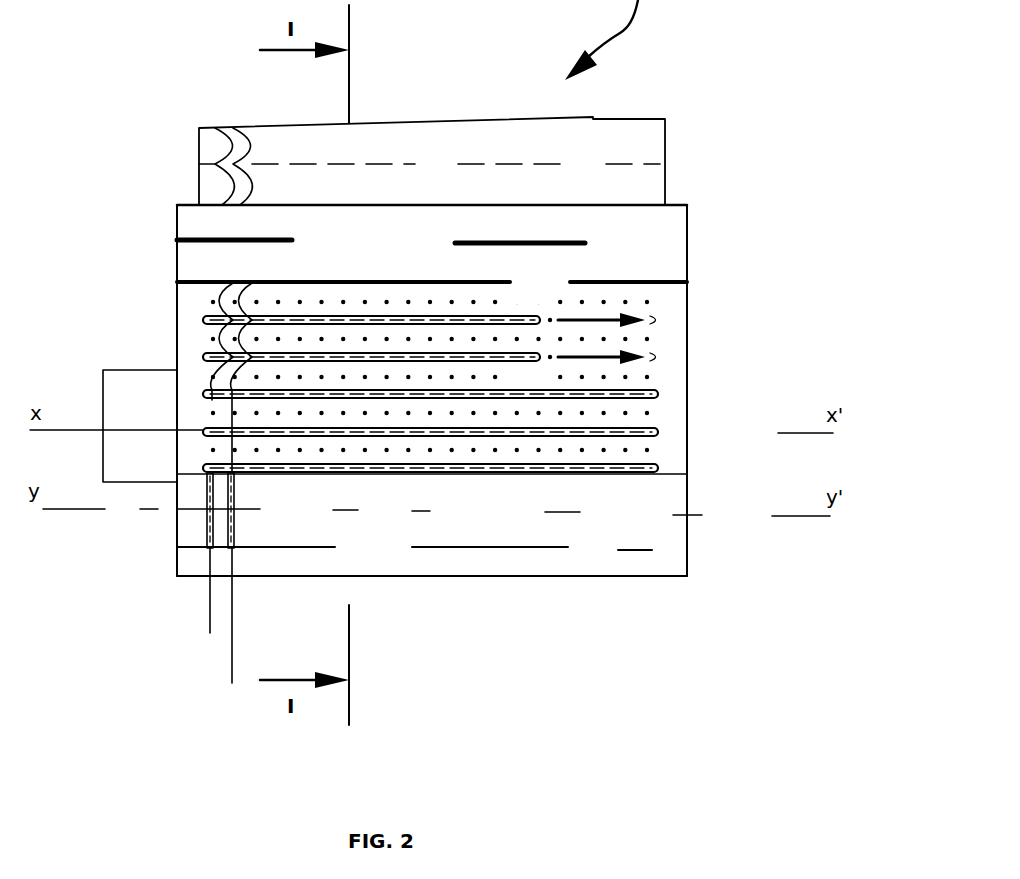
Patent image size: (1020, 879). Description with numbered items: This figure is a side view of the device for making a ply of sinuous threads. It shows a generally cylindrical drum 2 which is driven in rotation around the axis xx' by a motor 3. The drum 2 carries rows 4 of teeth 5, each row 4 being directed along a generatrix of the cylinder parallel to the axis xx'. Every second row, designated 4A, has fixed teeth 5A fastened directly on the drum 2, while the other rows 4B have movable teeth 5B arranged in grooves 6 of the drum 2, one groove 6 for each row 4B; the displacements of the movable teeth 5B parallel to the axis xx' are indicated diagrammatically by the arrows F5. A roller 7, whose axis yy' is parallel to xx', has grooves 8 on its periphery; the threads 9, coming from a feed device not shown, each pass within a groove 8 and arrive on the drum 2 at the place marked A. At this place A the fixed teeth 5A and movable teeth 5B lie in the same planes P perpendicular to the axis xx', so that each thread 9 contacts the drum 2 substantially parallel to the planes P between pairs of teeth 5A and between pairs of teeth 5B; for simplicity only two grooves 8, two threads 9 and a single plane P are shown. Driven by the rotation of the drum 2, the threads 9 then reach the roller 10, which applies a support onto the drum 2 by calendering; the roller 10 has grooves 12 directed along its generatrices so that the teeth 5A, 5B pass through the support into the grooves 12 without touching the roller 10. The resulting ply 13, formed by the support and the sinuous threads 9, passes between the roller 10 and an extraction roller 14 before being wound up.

The drum 2 is at (687, 340).
The motor 3 is at (143, 370).
The rows of teeth 4 is at (607, 450).
The teeth 5 is at (648, 450).
The grooves 6 is at (660, 436).
The roller 7 is at (630, 578).
The grooves 8 is at (207, 535).
The threads 9 is at (232, 668).
The roller 10 is at (687, 243).
The grooves 12 is at (177, 240).
The ply 13 is at (665, 133).
The extraction roller 14 is at (665, 198).
The rows of fixed teeth 4A is at (612, 312).
The rows of movable teeth 4B is at (310, 357).
The fixed teeth 5A is at (645, 310).
The movable teeth 5B is at (355, 357).
The arrows indicating displacement of movable teeth F5 is at (573, 312).
The place of thread contact A is at (205, 432).
The planes P is at (256, 394).